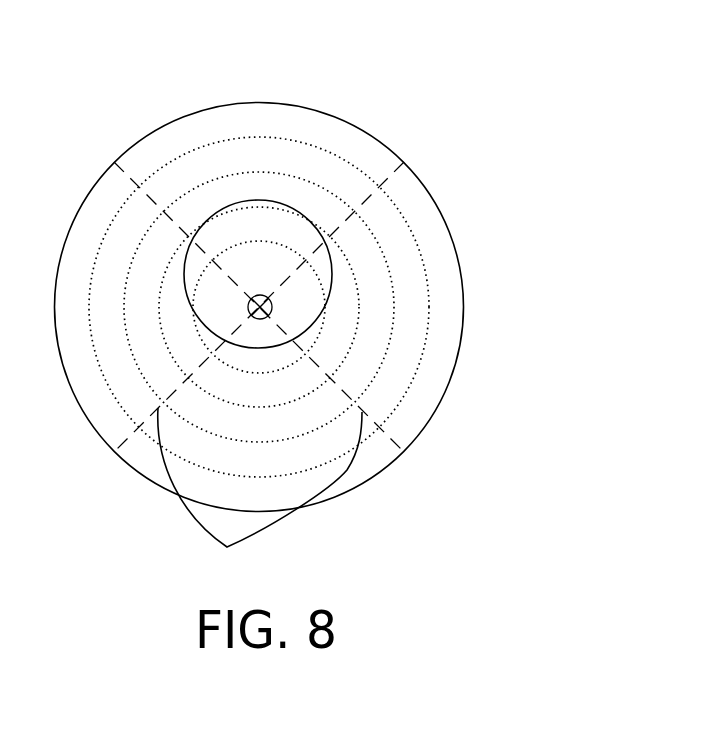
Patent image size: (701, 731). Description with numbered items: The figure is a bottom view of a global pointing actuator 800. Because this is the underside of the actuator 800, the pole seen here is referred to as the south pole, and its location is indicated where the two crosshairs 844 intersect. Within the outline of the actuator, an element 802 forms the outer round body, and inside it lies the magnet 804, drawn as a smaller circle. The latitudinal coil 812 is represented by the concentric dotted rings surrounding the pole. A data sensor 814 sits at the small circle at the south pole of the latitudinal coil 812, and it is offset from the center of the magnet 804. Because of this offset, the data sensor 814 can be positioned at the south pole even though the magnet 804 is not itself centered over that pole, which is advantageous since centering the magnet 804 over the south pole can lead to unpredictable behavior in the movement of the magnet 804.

The global pointing actuator 800 is at (405, 75).
The outer lens body 802 is at (452, 322).
The magnet 804 is at (247, 208).
The latitudinal coil 812 is at (372, 382).
The data sensor 814 is at (272, 307).
The crosshairs 844 is at (260, 493).